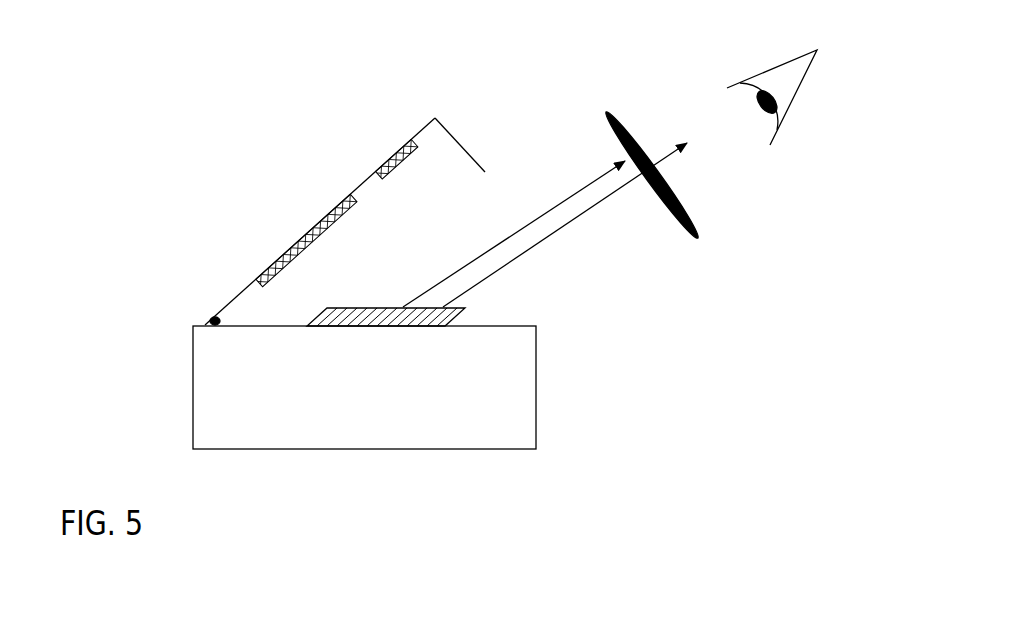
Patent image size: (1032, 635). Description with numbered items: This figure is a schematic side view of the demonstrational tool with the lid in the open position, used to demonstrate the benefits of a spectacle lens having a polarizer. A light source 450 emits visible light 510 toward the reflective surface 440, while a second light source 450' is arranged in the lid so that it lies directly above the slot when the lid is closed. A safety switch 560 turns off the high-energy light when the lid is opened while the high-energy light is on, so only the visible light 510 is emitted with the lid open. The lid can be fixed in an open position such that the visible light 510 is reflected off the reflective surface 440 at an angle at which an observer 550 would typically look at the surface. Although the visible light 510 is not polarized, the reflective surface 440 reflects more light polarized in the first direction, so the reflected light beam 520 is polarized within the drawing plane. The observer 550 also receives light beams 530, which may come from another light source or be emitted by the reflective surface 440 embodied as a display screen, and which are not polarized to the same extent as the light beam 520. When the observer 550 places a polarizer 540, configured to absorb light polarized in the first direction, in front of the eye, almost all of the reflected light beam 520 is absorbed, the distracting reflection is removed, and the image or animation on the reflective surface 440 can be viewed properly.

The reflective surface 440 is at (350, 325).
The light source 450 is at (245, 229).
The second light source 450' is at (320, 133).
The visible light 510 is at (400, 302).
The light beam 520 is at (514, 234).
The light beams 530 is at (565, 225).
The polarizer 540 is at (605, 110).
The observer 550 is at (795, 100).
The safety switch 560 is at (202, 317).